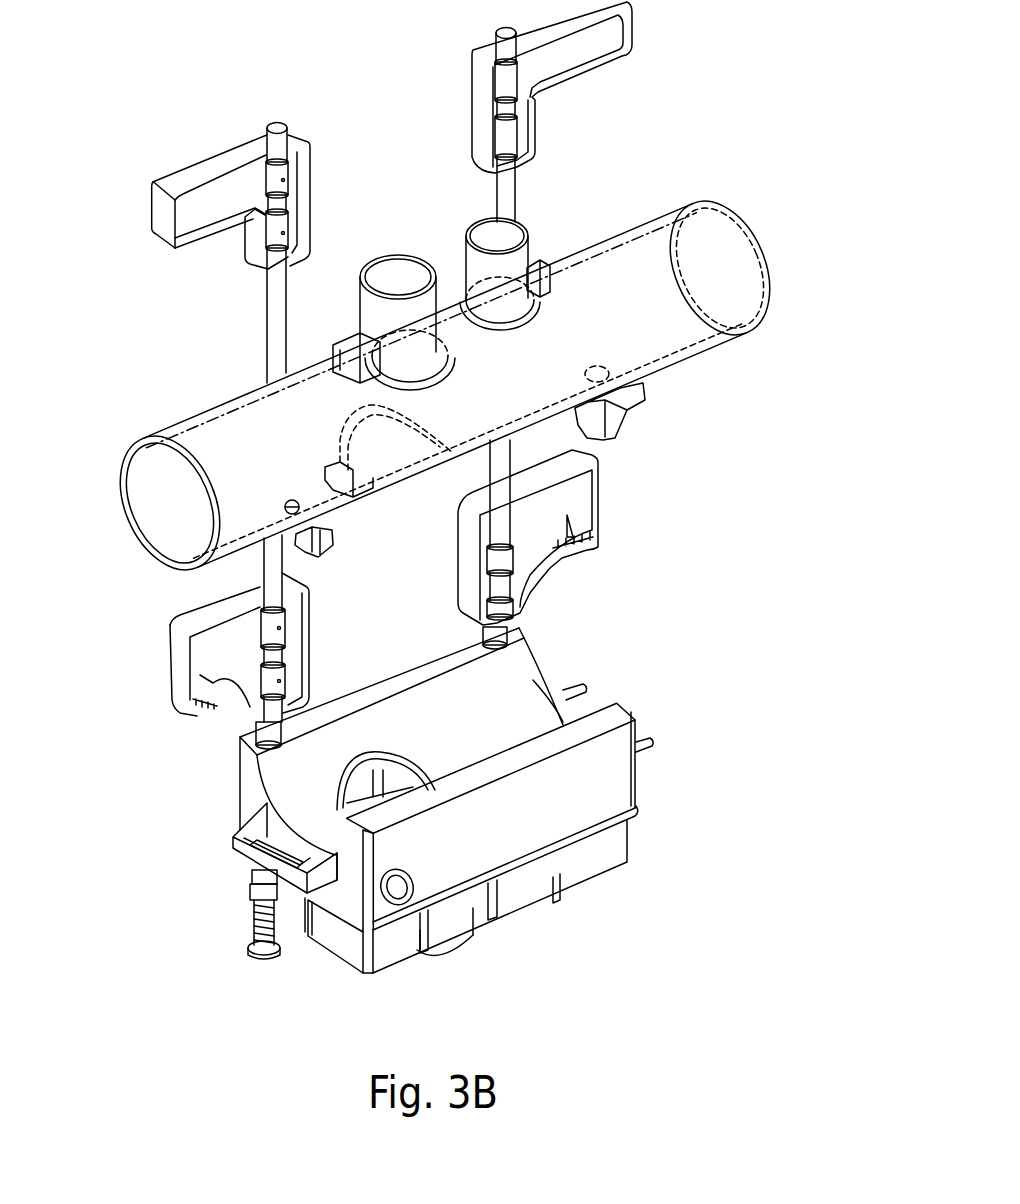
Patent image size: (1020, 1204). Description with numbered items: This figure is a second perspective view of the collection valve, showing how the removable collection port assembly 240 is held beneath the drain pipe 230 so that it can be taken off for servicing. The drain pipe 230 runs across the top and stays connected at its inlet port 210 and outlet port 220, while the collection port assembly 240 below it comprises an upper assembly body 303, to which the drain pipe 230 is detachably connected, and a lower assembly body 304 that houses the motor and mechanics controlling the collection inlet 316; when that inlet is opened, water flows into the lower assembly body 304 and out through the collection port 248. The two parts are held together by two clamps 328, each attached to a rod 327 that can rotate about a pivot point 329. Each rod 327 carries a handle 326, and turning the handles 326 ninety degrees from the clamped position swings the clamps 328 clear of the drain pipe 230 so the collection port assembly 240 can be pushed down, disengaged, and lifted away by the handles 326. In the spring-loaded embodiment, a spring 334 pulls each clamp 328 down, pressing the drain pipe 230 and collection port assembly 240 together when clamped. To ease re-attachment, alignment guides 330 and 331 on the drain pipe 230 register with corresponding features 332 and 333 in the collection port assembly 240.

The inlet port 210 is at (135, 522).
The outlet port 220 is at (760, 253).
The drain pipe 230 is at (257, 422).
The collection port assembly 240 is at (424, 817).
The collection port 248 is at (465, 942).
The upper assembly body 303 is at (502, 828).
The lower assembly body 304 is at (615, 853).
The collection inlet 316 is at (358, 745).
The handle 326 is at (215, 202).
The rod 327 is at (507, 200).
The clamp 328 is at (553, 500).
The pivot point 329 is at (505, 623).
The alignment guide 330 is at (322, 543).
The alignment guide 331 is at (627, 417).
The alignment feature 332 is at (265, 863).
The alignment feature 333 is at (582, 700).
The spring 334 is at (250, 940).